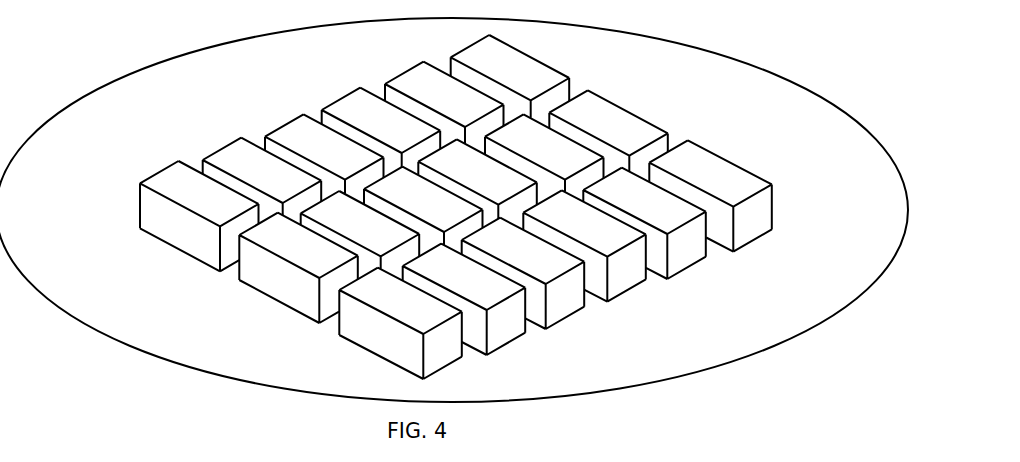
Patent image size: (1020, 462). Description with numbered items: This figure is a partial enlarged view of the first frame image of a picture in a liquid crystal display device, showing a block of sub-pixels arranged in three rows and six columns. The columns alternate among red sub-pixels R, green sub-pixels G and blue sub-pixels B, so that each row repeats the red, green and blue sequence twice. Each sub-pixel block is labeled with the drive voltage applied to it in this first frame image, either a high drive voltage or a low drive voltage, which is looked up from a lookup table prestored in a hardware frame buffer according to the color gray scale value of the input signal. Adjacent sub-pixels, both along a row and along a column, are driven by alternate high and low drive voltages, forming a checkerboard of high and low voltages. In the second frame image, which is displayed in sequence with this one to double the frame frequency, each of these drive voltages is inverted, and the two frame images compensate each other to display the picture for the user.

The red sub-pixel R is at (221, 119).
The green sub-pixel G is at (299, 92).
The blue sub-pixel B is at (350, 57).